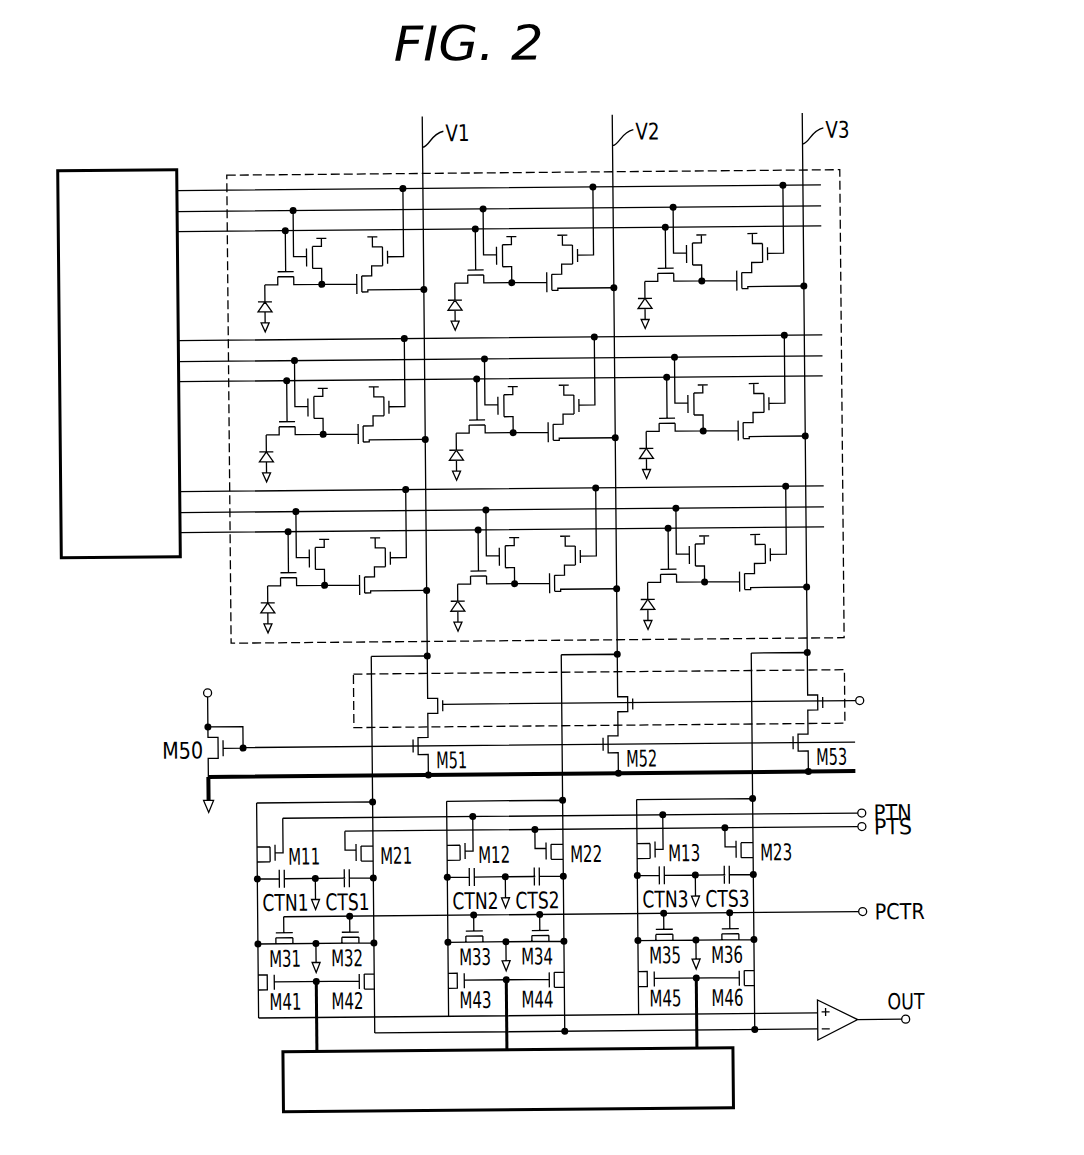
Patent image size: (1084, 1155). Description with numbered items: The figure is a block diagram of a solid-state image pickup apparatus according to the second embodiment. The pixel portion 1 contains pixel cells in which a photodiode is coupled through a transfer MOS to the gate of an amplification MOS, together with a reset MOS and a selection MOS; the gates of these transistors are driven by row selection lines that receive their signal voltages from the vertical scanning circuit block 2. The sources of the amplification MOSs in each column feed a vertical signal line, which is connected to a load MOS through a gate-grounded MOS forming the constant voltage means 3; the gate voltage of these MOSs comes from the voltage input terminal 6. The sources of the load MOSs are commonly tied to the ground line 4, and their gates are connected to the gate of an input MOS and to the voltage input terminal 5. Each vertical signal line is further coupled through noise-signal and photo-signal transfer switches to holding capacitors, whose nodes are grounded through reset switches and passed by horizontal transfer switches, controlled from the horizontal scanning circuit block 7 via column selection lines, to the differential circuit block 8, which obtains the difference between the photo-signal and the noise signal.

The pixel portion 1 is at (277, 175).
The vertical scanning circuit block 2 is at (143, 169).
The constant voltage means 3 is at (349, 703).
The GND line 4 is at (203, 792).
The voltage input terminal 5 is at (207, 689).
The voltage input terminal 6 is at (859, 704).
The horizontal scanning circuit block 7 is at (275, 1080).
The differential circuit block 8 is at (830, 1042).